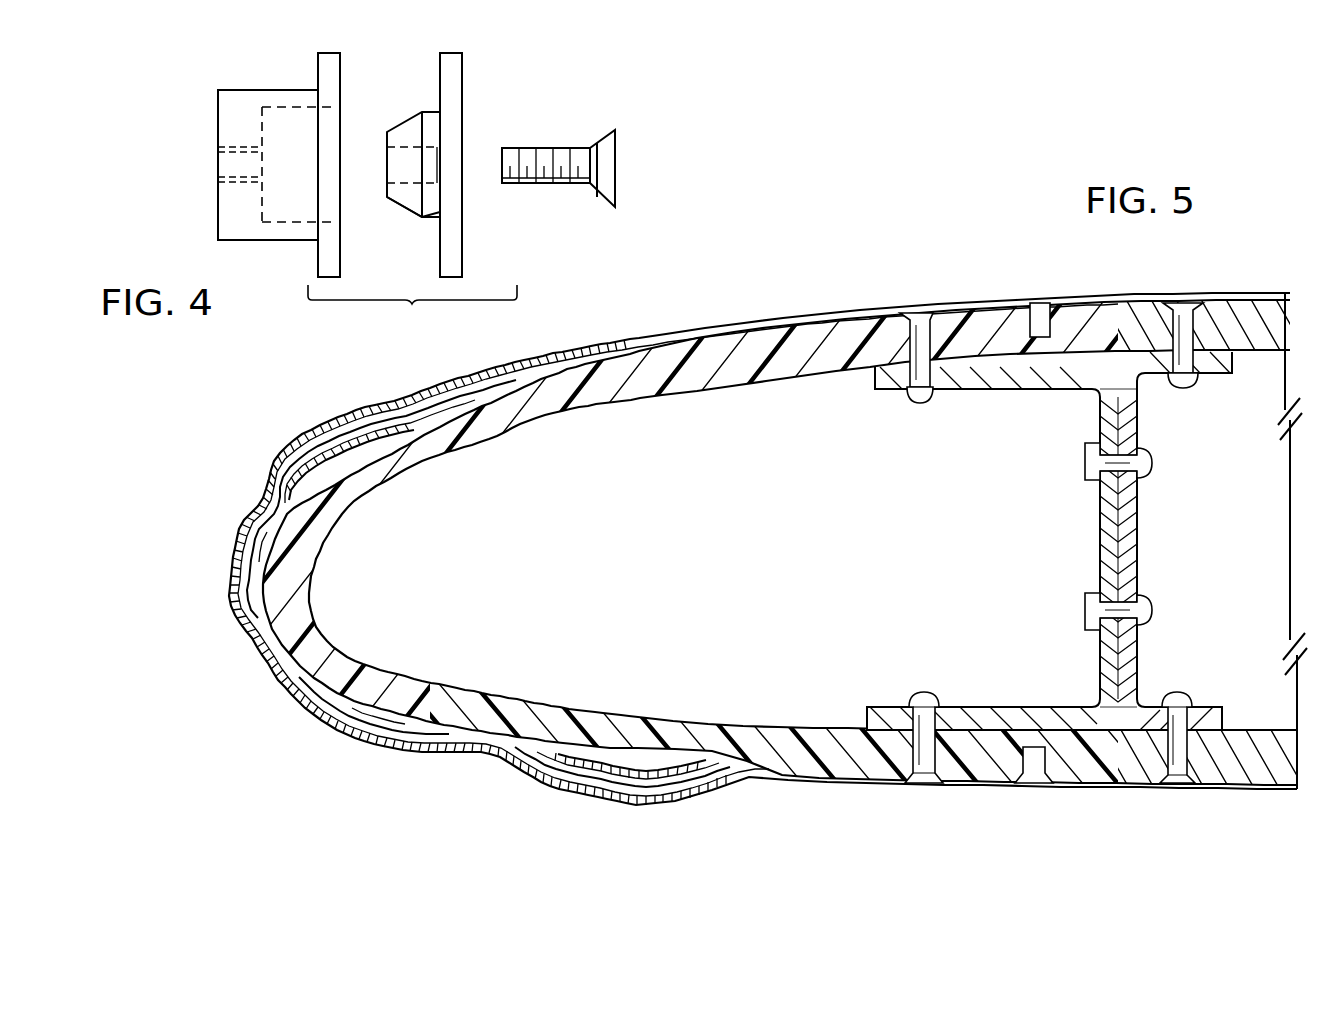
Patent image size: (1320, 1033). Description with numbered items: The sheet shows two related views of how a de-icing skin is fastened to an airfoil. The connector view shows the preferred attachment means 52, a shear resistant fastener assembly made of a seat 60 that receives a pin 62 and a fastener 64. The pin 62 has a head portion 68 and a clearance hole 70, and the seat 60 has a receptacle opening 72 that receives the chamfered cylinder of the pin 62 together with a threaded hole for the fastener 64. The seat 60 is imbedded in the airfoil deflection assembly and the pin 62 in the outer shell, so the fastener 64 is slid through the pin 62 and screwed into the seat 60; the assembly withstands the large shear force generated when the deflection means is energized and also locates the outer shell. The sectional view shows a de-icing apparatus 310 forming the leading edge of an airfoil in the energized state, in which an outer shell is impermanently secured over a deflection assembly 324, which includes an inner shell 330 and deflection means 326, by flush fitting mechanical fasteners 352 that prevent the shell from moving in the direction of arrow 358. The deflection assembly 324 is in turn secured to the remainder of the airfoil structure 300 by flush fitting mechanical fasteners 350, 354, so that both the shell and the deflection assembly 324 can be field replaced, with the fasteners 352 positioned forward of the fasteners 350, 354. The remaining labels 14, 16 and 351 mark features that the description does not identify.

In FIG. 4, the pin holes 14 is at (237, 177).
In FIG. 4, the nut 16 is at (412, 128).
In FIG. 4, the attachment means 52 is at (305, 311).
In FIG. 4, the seat 60 is at (280, 240).
In FIG. 4, the pin 62 is at (432, 112).
In FIG. 4, the fastener 64 is at (553, 147).
In FIG. 4, the head portion 68 is at (455, 72).
In FIG. 4, the clearance hole 70 is at (407, 150).
In FIG. 4, the receptacle opening 72 is at (292, 105).
In FIG. 5, the airfoil structure 300 is at (1243, 778).
In FIG. 5, the de-icing apparatus 310 is at (489, 780).
In FIG. 5, the deflection assembly 324 is at (1133, 313).
In FIG. 5, the deflection means 326 is at (497, 385).
In FIG. 5, the inner shell 330 is at (597, 395).
In FIG. 5, the flush fitting mechanical fasteners 350 is at (922, 310).
In FIG. 5, the web rivet 351 is at (1153, 598).
In FIG. 5, the flush fitting mechanical fasteners 352 is at (1046, 300).
In FIG. 5, the flush fitting mechanical fasteners 354 is at (1176, 784).
In FIG. 5, the arrow 358 is at (112, 577).